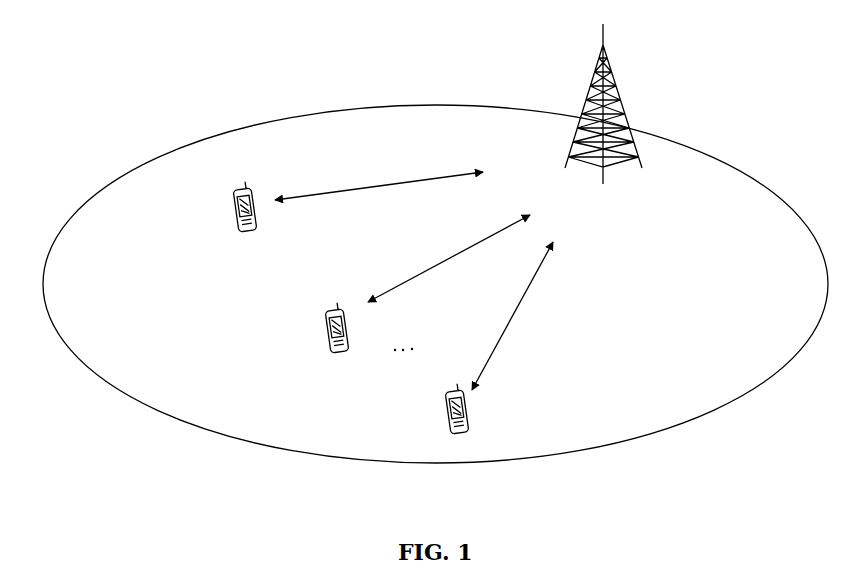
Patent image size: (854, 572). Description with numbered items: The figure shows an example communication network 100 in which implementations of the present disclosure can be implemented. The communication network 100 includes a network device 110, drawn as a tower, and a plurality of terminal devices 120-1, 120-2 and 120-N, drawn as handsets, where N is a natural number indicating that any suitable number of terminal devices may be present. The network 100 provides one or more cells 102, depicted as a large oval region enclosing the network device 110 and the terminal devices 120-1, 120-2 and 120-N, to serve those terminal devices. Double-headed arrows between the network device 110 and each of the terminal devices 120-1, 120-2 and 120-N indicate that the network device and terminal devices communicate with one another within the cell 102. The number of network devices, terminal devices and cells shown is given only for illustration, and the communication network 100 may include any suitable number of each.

The communication network 100 is at (213, 103).
The cell 102 is at (680, 145).
The network device 110 is at (603, 52).
The terminal device 120-1 is at (236, 205).
The terminal device 120-2 is at (330, 310).
The terminal device 120-N is at (448, 408).